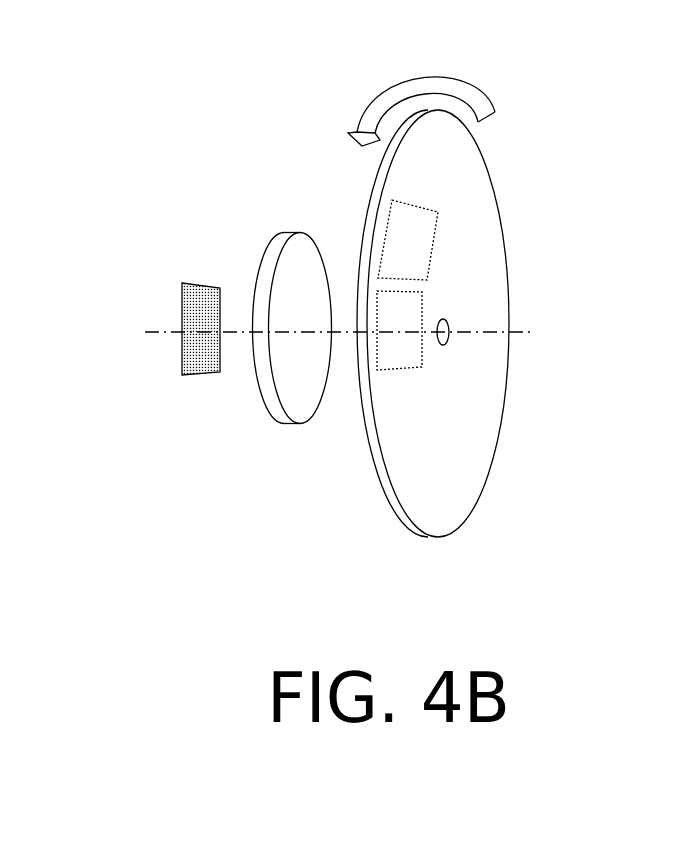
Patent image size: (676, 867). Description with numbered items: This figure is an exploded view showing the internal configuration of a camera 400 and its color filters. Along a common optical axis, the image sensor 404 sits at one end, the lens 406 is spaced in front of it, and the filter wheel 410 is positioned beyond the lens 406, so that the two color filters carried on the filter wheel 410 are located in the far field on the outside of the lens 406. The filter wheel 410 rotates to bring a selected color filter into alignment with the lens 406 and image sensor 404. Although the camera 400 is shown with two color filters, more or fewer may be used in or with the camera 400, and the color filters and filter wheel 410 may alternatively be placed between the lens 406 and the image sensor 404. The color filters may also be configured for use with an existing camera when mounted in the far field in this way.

The camera 400 is at (156, 112).
The image sensor 404 is at (181, 306).
The lens 406 is at (268, 408).
The filter wheel 410 is at (481, 158).